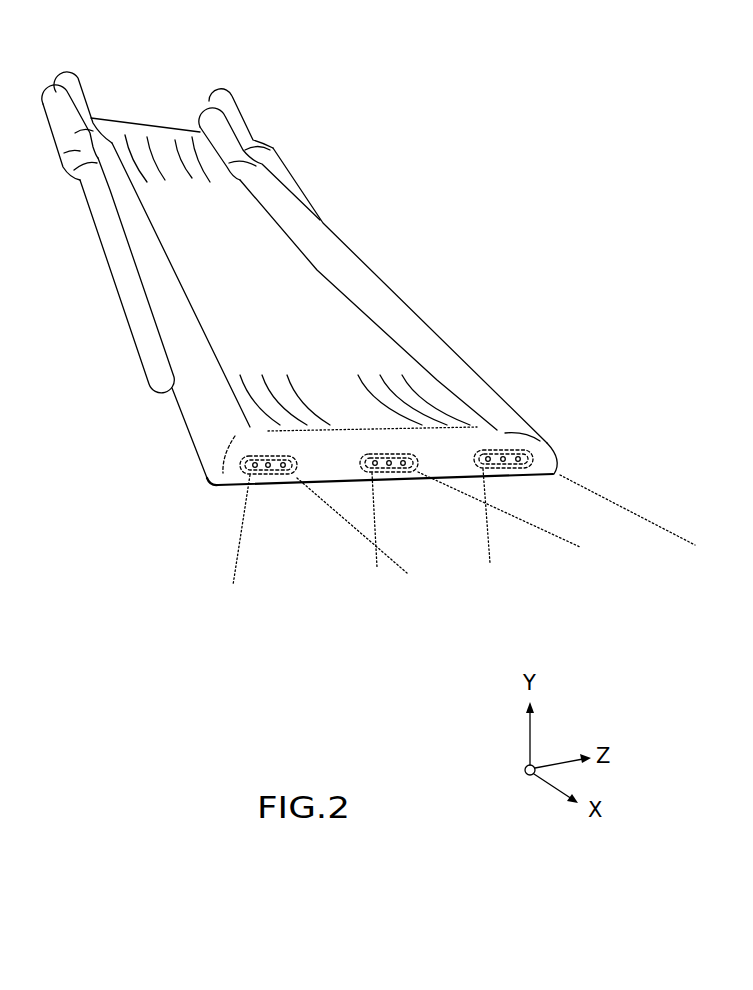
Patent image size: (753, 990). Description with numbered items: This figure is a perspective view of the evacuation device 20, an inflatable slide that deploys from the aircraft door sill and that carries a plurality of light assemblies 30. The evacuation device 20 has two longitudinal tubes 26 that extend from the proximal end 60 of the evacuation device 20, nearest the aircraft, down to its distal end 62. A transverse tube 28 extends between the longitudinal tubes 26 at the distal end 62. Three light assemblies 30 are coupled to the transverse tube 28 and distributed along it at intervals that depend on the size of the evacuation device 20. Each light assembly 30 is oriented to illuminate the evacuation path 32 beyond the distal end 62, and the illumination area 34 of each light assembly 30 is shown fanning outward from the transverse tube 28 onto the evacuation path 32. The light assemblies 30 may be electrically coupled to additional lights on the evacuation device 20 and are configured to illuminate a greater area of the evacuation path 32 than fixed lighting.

The evacuation device 20 is at (452, 124).
The longitudinal tubes 26 is at (357, 258).
The transverse tube 28 is at (336, 442).
The light assembly 30 is at (243, 472).
The evacuation path 32 is at (440, 533).
The illumination area 34 is at (623, 508).
The proximal end 60 is at (244, 74).
The distal end 62 is at (614, 449).